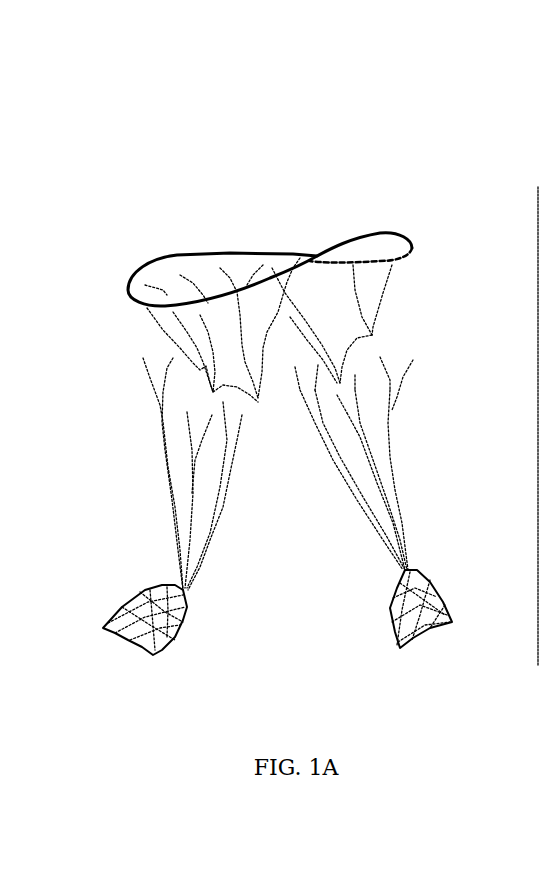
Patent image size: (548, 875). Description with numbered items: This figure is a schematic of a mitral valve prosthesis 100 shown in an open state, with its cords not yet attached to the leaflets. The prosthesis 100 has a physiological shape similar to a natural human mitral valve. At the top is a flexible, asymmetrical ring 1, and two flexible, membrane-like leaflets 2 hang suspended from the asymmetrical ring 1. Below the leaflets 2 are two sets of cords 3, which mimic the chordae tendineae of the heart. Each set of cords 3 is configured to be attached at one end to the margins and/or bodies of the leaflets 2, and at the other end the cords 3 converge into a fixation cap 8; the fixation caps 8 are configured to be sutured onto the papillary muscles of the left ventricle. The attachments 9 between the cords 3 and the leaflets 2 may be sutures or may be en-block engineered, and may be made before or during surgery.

The mitral valve prosthesis 100 is at (135, 225).
The asymmetrical ring 1 is at (188, 255).
The leaflets 2 is at (240, 263).
The cords 3 is at (390, 450).
The fixation cap 8 is at (430, 608).
The attachments 9 is at (412, 360).